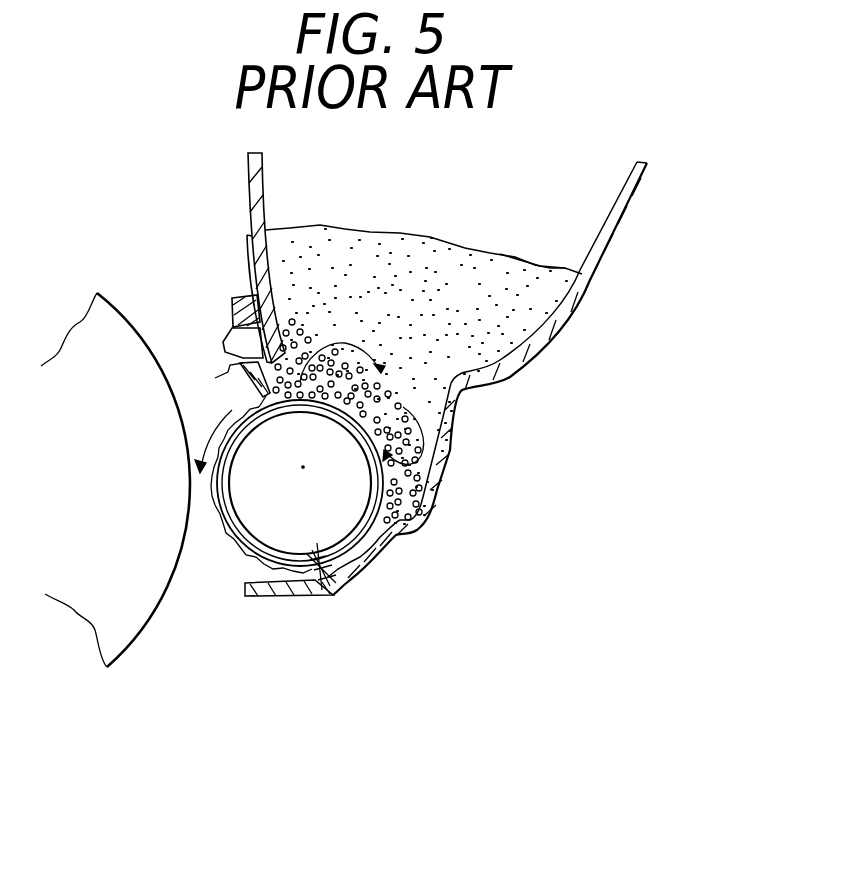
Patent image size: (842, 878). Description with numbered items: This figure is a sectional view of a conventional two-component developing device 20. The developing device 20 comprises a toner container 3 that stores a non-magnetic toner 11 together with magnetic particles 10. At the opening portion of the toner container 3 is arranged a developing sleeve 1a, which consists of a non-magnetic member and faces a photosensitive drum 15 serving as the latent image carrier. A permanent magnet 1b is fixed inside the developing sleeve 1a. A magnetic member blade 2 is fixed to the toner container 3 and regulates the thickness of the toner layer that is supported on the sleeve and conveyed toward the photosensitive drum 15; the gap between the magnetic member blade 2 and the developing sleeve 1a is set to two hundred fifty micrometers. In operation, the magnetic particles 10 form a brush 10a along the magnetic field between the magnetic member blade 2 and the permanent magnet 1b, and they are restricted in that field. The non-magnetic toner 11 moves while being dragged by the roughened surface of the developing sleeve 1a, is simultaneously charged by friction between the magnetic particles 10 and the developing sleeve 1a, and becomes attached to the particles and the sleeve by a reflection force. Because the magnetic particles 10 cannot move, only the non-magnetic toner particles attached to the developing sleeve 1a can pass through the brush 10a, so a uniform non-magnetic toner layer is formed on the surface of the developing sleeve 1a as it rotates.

The developing sleeve 1a is at (312, 590).
The permanent magnet 1b is at (343, 590).
The magnetic member blade 2 is at (215, 378).
The toner container 3 is at (571, 332).
The magnetic particles 10 is at (297, 318).
The brush 10a is at (310, 380).
The non-magnetic toner 11 is at (539, 272).
The photosensitive drum 15 is at (148, 620).
The developing device 20 is at (419, 403).